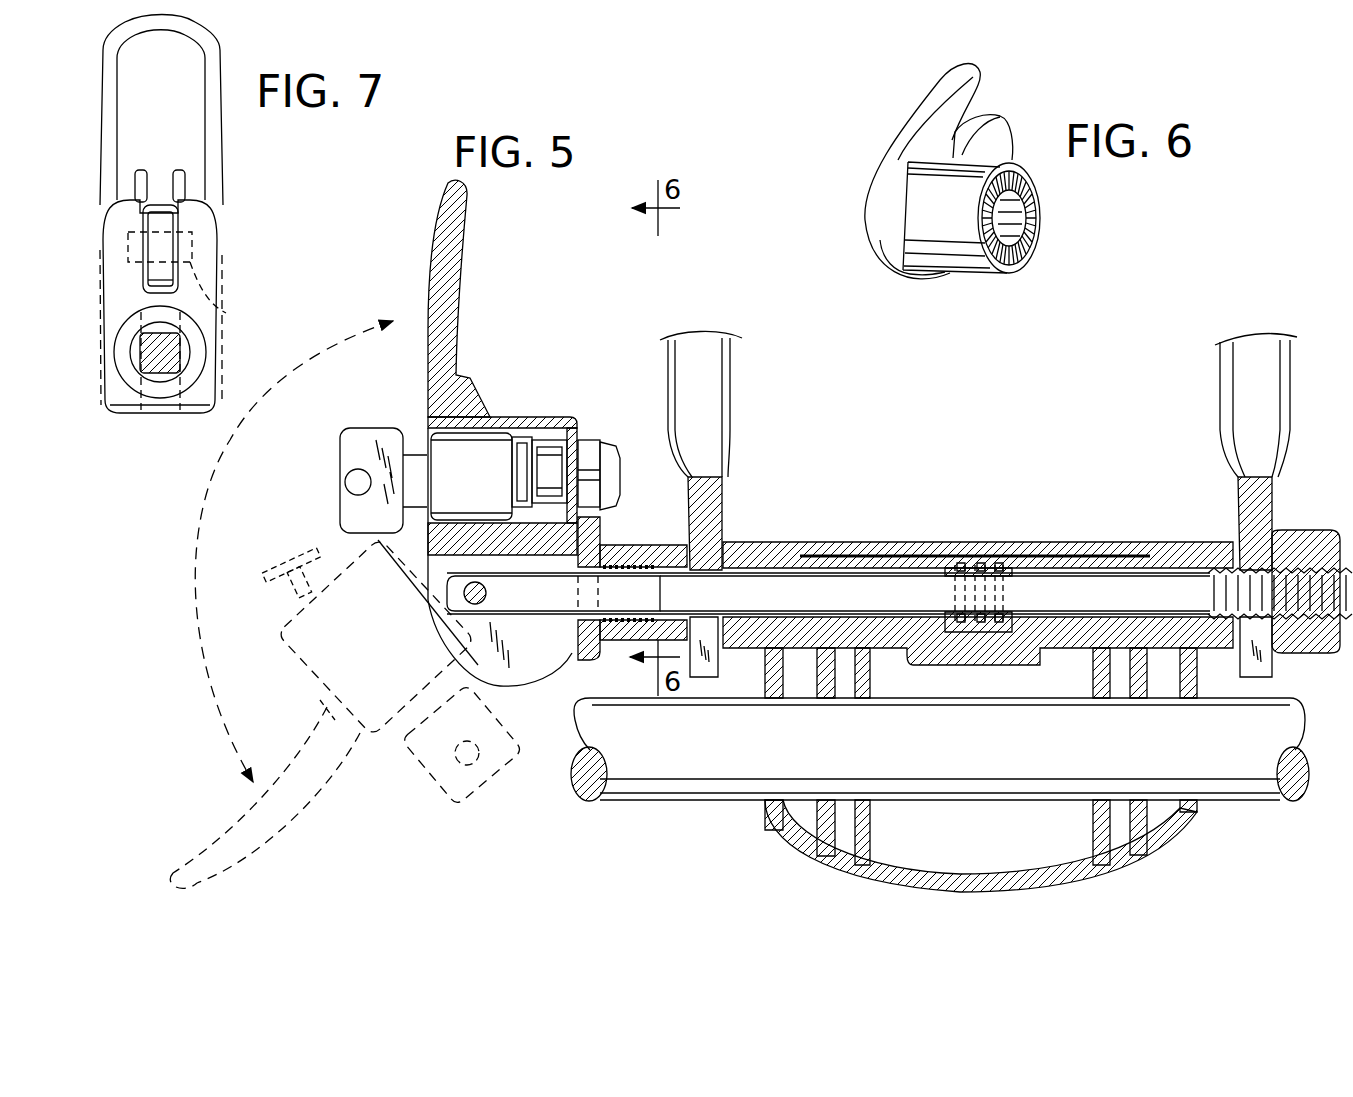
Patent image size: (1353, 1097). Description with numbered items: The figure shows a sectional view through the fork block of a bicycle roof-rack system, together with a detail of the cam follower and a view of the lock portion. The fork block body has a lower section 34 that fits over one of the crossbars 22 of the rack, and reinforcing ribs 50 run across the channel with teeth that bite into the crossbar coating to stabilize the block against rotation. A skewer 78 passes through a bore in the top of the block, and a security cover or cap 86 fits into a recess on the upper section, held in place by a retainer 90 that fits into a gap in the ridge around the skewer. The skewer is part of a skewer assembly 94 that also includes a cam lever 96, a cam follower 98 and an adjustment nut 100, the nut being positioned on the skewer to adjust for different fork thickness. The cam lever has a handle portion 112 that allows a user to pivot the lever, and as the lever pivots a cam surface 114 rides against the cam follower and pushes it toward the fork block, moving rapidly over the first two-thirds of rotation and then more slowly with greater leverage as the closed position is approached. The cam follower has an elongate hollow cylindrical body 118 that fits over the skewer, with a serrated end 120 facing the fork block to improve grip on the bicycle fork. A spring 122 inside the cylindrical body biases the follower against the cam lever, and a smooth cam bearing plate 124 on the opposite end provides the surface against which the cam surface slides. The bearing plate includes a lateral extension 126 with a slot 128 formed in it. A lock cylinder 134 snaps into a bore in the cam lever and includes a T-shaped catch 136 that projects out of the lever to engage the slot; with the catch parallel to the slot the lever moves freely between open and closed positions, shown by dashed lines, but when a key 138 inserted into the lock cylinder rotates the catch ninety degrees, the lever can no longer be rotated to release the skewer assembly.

In FIG. 5, the crossbars 22 is at (1138, 760).
In FIG. 5, the lower section 34 is at (1068, 886).
In FIG. 5, the reinforcing ribs 50 is at (835, 681).
In FIG. 5, the skewer 78 is at (895, 605).
In FIG. 5, the security cover or cap 86 is at (918, 542).
In FIG. 5, the retainer 90 is at (997, 640).
In FIG. 5, the skewer assembly 94 is at (571, 397).
In FIG. 7, the cam lever 96 is at (224, 151).
In FIG. 5, the cam lever 96 is at (480, 368).
In FIG. 7, the cam follower 98 is at (224, 271).
In FIG. 6, the cam follower 98 is at (968, 276).
In FIG. 5, the cam follower 98 is at (612, 545).
In FIG. 5, the adjustment nut 100 is at (1300, 532).
In FIG. 5, the handle portion 112 is at (457, 272).
In FIG. 5, the cam surface 114 is at (537, 684).
In FIG. 6, the elongate hollow cylindrical body 118 is at (964, 231).
In FIG. 5, the elongate hollow cylindrical body 118 is at (645, 556).
In FIG. 6, the serrated end 120 is at (1041, 237).
In FIG. 5, the spring 122 is at (612, 608).
In FIG. 6, the cam bearing plate 124 is at (884, 173).
In FIG. 5, the cam bearing plate 124 is at (562, 656).
In FIG. 6, the lateral extension 126 is at (910, 113).
In FIG. 6, the slot 128 is at (980, 107).
In FIG. 5, the slot 128 is at (586, 438).
In FIG. 5, the lock cylinder 134 is at (372, 442).
In FIG. 7, the T-shaped catch 136 is at (170, 224).
In FIG. 5, the T-shaped catch 136 is at (613, 458).
In FIG. 5, the key 138 is at (498, 477).